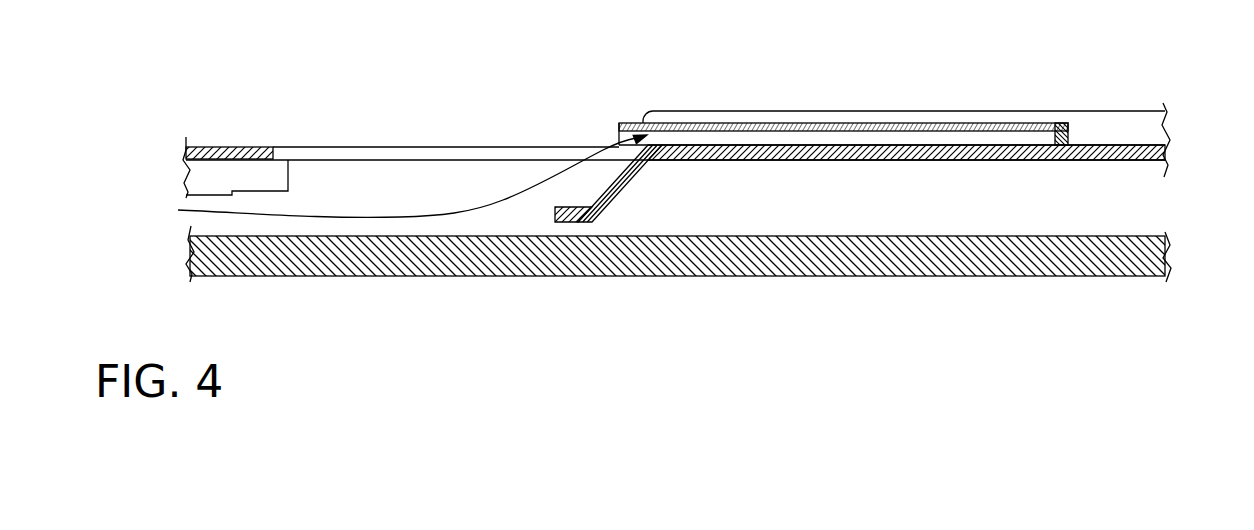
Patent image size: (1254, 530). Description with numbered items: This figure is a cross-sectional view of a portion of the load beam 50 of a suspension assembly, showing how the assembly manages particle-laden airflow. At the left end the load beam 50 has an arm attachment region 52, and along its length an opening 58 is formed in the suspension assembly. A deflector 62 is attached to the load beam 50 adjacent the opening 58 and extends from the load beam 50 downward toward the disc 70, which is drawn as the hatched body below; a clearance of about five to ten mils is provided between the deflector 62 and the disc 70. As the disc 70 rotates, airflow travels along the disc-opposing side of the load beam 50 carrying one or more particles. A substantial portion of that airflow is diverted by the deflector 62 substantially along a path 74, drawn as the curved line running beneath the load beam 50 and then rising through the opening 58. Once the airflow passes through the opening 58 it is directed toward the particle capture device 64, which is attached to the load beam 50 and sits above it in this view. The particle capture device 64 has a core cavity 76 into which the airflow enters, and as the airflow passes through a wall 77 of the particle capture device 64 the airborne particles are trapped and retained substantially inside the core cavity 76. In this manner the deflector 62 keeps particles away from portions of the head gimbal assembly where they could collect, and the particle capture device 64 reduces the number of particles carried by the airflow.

The load beam 50 is at (1066, 84).
The arm attachment region 52 is at (254, 137).
The opening 58 is at (444, 150).
The deflector 62 is at (626, 187).
The particle capture device 64 is at (840, 123).
The disc 70 is at (903, 262).
The path 74 is at (383, 218).
The core cavity 76 is at (709, 120).
The wall 77 is at (912, 123).